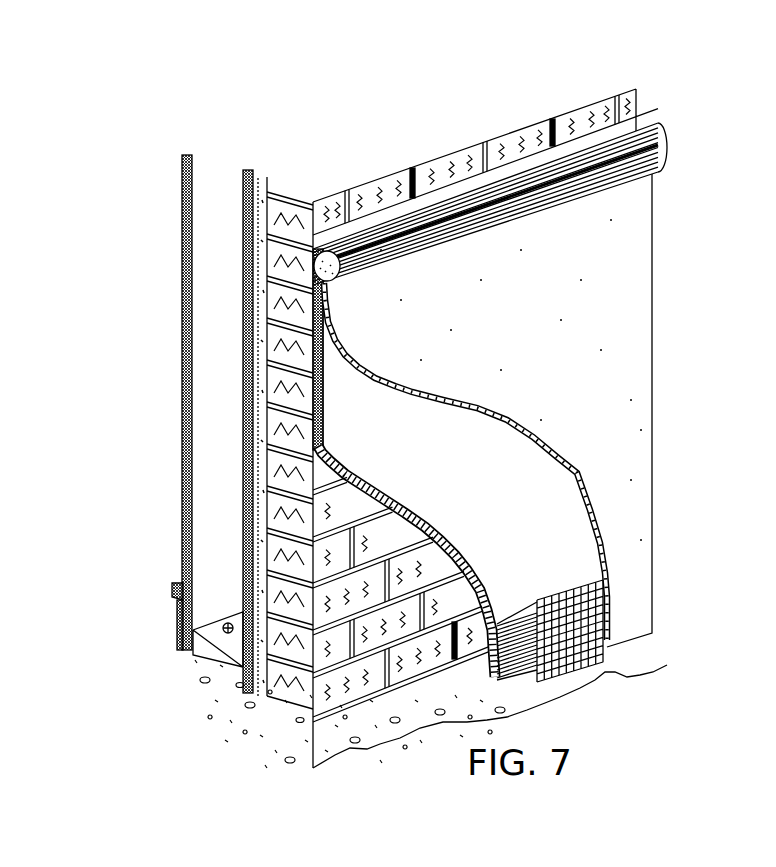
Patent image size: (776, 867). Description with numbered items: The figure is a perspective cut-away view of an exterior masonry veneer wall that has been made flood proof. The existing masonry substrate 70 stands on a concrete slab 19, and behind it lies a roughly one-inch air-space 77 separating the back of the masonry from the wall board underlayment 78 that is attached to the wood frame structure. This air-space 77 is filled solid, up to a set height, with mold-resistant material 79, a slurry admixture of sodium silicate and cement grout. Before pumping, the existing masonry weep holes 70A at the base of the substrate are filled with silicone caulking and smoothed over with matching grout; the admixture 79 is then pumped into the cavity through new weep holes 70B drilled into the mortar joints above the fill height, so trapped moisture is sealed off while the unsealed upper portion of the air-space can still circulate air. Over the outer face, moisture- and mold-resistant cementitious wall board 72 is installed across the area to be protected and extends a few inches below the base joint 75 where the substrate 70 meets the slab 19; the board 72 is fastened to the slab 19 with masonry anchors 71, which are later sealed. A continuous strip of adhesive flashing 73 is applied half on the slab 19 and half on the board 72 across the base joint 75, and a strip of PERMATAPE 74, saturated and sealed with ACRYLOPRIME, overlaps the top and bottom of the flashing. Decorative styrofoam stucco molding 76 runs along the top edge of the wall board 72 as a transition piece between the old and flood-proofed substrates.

The concrete slab 19 is at (287, 729).
The masonry substrate 70 is at (607, 120).
The masonry weep holes 70A is at (452, 625).
The new weep holes 70B is at (552, 121).
The masonry anchors 71 is at (560, 492).
The cementitious wall board 72 is at (516, 410).
The adhesive flashing 73 is at (520, 653).
The PERMATAPE strip 74 is at (607, 602).
The base joint 75 is at (388, 683).
The decorative styrofoam stucco molding 76 is at (612, 152).
The air-space 77 is at (257, 210).
The wall board underlayment 78 is at (243, 262).
The mold-resistant material 79 is at (260, 323).